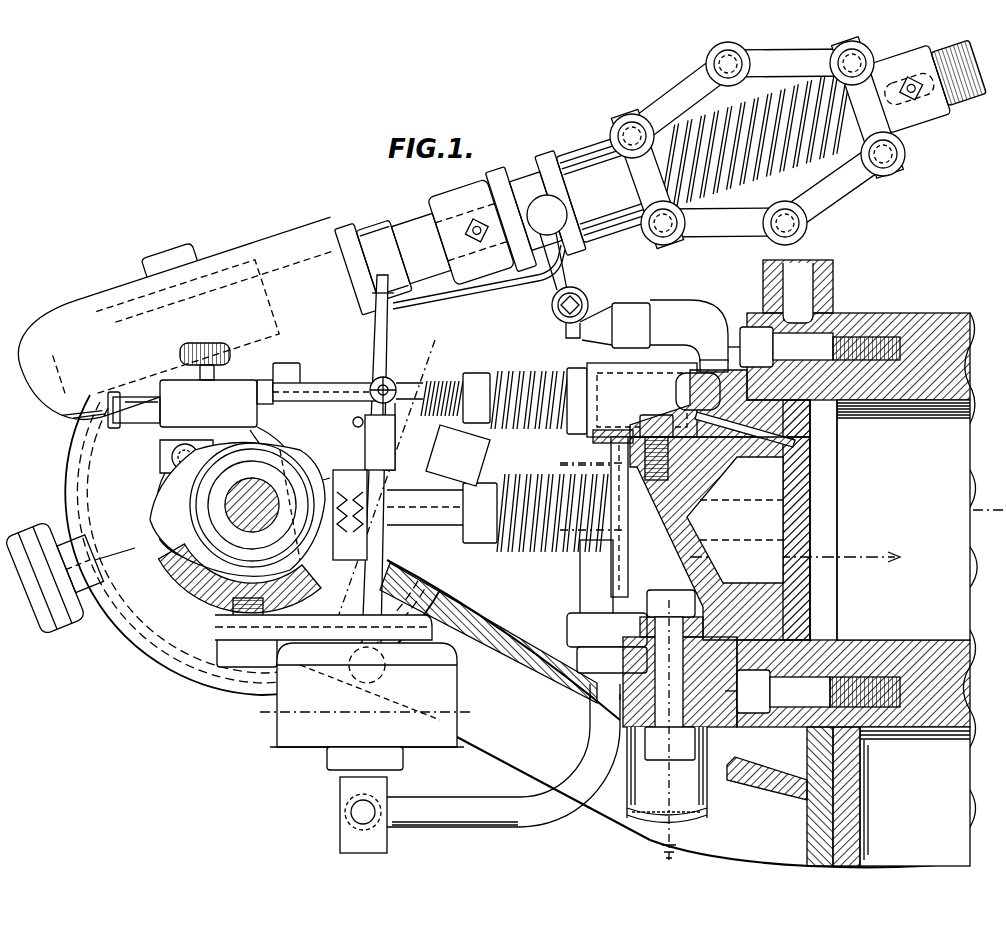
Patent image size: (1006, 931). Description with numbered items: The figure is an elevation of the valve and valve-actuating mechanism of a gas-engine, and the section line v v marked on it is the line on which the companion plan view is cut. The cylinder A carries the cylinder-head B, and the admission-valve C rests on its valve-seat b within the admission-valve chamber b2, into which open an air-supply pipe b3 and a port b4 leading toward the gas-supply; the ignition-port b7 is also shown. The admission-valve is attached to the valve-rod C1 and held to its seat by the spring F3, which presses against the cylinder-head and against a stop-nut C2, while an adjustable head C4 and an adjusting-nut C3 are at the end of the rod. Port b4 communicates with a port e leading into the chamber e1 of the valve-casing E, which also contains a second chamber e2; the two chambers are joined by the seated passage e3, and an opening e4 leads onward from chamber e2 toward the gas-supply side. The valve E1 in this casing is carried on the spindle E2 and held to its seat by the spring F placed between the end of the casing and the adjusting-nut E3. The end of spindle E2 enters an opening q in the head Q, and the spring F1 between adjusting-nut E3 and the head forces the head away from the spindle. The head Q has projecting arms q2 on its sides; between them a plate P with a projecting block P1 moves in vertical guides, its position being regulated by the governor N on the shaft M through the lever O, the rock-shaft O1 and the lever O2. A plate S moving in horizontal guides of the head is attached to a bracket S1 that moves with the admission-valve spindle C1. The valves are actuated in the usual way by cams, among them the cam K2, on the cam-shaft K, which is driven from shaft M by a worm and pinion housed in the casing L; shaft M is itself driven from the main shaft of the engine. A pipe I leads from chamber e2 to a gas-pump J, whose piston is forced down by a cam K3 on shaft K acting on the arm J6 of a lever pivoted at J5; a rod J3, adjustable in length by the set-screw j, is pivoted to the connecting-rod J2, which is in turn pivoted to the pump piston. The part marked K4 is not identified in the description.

The cylinder A is at (696, 563).
The cylinder-head B is at (847, 625).
The admission-valve C is at (830, 633).
The valve-seat b is at (821, 633).
The admission-valve chamber b2 is at (685, 535).
The air-supply pipe b3 is at (715, 725).
The port b4 is at (602, 555).
The ignition-port b7 is at (765, 383).
The valve-casing E is at (642, 400).
The valve E1 is at (656, 417).
The valve-spindle E2 is at (526, 371).
The adjusting-nut E3 is at (480, 372).
The port e is at (640, 445).
The chamber e1 is at (642, 400).
The second chamber e2 is at (716, 345).
The seated passage e3 is at (676, 385).
The opening e4 is at (745, 427).
The spring F is at (575, 368).
The spring F1 is at (448, 380).
The spring F3 is at (500, 470).
The pipe I is at (557, 563).
The gas-pump J is at (458, 688).
The connecting-rod J2 is at (252, 395).
The rod J3 is at (332, 390).
The lever pivot J5 is at (172, 448).
The lever arm J6 is at (215, 550).
The set-screw j is at (231, 356).
The cam-shaft K is at (235, 505).
The cam K2 is at (252, 505).
The cam K3 is at (255, 580).
The disk K4 is at (128, 455).
The casing L is at (62, 410).
The shaft M is at (541, 209).
The governor N is at (800, 139).
The lever O is at (568, 252).
The rock-shaft O1 is at (588, 300).
The lever O2 is at (468, 293).
The plate P is at (360, 312).
The projecting block P1 is at (378, 345).
The head Q is at (366, 424).
The opening q is at (400, 380).
The projecting arms q2 is at (353, 424).
The plate S is at (268, 385).
The bracket S1 is at (303, 430).
The section line v is at (579, 471).
The valve-rod C1 is at (535, 555).
The stop-nut C2 is at (480, 545).
The adjusting-nut C3 is at (380, 575).
The adjustable head C4 is at (340, 515).